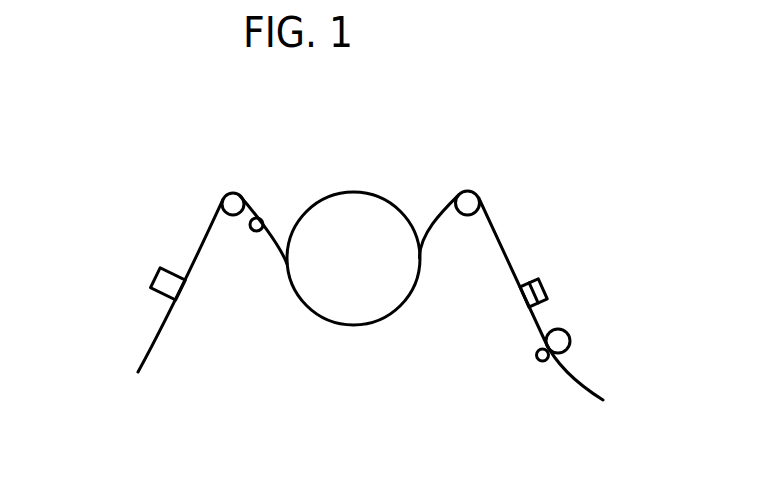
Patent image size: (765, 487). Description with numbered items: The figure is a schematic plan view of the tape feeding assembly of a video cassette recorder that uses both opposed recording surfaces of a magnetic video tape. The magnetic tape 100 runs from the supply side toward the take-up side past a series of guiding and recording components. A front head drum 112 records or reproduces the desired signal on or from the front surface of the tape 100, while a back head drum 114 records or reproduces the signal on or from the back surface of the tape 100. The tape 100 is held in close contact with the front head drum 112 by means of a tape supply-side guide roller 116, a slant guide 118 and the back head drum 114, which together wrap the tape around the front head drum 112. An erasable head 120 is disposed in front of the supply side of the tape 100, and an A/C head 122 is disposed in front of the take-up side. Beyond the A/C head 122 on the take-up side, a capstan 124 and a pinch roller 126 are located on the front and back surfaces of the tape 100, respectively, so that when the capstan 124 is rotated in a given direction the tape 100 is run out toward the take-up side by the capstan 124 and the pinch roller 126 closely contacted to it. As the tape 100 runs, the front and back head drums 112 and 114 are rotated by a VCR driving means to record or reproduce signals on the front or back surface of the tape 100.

The magnetic tape 100 is at (165, 324).
The front head drum 112 is at (363, 192).
The back head drum 114 is at (468, 191).
The tape supply-side guide roller 116 is at (232, 192).
The slant guide 118 is at (261, 218).
The erasable head 120 is at (158, 272).
The A/C head 122 is at (538, 279).
The capstan 124 is at (541, 361).
The pinch roller 126 is at (571, 333).